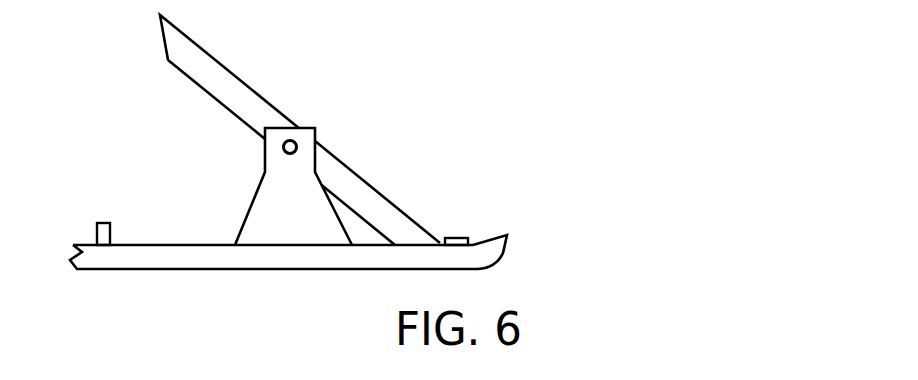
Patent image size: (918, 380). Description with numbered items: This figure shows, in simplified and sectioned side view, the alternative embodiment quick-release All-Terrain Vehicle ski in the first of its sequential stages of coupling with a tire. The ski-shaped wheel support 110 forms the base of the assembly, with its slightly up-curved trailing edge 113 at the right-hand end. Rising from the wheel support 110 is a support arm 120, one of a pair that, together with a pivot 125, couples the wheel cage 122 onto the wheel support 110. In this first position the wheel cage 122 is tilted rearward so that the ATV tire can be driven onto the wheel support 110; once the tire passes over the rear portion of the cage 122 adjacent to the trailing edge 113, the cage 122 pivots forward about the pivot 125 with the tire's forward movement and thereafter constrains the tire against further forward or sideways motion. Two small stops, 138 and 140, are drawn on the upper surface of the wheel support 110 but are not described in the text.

The ski-shaped wheel support 110 is at (200, 243).
The trailing edge 113 is at (501, 252).
The support arm 120 is at (312, 230).
The wheel cage 122 is at (192, 43).
The pivot 125 is at (299, 140).
The stop pad 138 is at (458, 238).
The stop post 140 is at (97, 229).